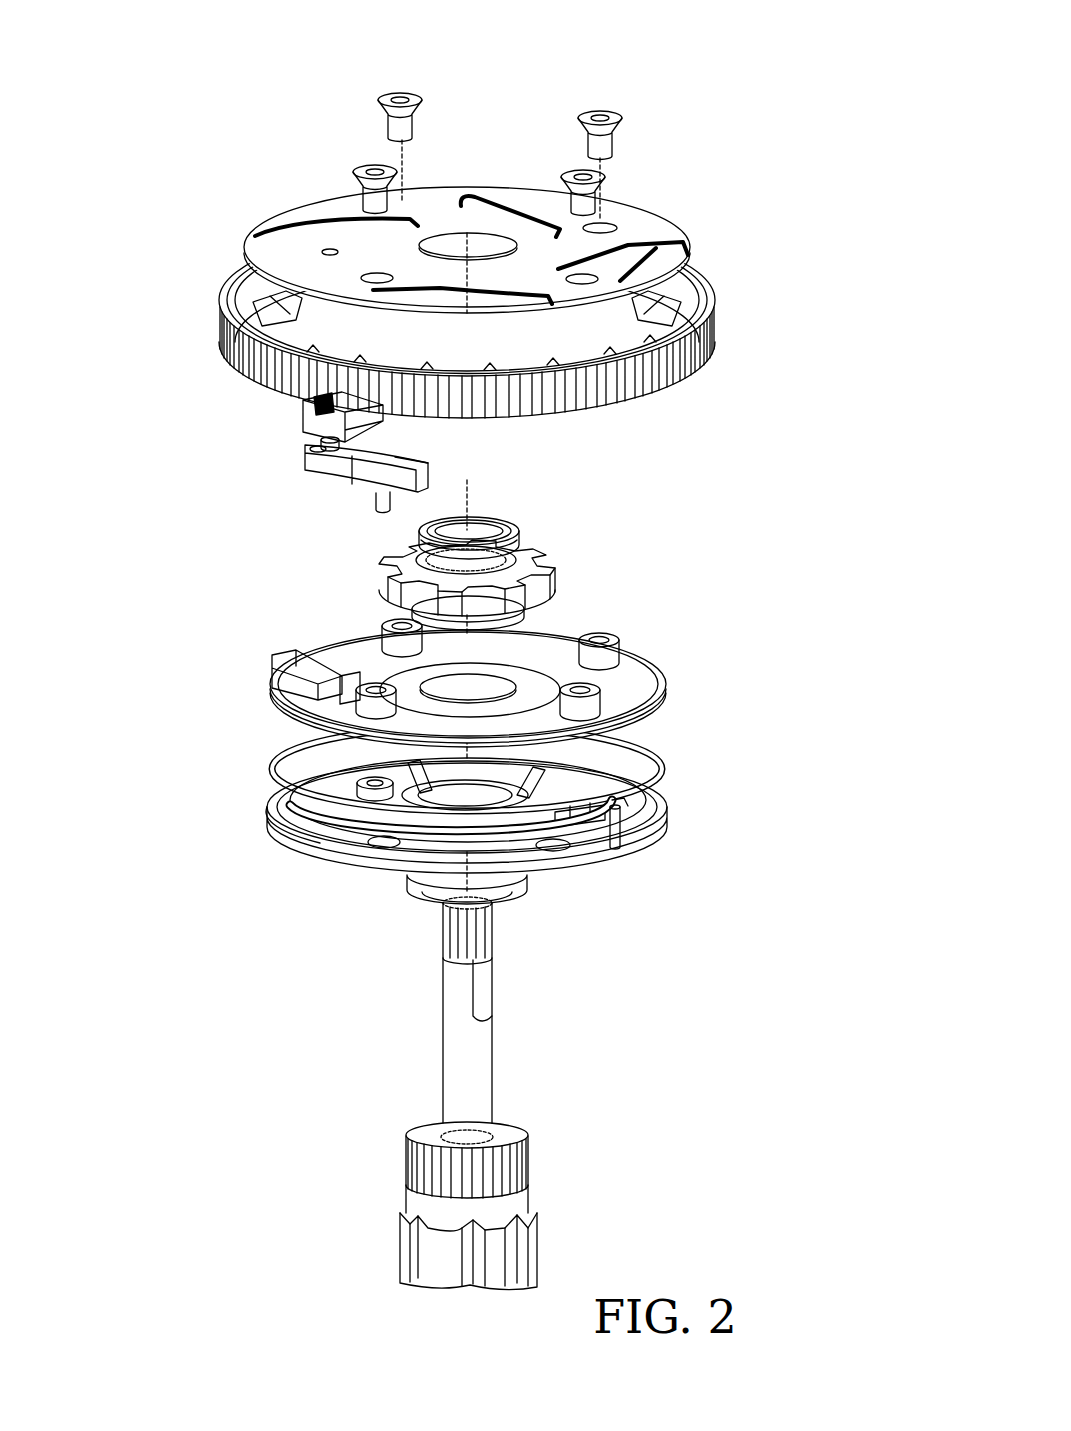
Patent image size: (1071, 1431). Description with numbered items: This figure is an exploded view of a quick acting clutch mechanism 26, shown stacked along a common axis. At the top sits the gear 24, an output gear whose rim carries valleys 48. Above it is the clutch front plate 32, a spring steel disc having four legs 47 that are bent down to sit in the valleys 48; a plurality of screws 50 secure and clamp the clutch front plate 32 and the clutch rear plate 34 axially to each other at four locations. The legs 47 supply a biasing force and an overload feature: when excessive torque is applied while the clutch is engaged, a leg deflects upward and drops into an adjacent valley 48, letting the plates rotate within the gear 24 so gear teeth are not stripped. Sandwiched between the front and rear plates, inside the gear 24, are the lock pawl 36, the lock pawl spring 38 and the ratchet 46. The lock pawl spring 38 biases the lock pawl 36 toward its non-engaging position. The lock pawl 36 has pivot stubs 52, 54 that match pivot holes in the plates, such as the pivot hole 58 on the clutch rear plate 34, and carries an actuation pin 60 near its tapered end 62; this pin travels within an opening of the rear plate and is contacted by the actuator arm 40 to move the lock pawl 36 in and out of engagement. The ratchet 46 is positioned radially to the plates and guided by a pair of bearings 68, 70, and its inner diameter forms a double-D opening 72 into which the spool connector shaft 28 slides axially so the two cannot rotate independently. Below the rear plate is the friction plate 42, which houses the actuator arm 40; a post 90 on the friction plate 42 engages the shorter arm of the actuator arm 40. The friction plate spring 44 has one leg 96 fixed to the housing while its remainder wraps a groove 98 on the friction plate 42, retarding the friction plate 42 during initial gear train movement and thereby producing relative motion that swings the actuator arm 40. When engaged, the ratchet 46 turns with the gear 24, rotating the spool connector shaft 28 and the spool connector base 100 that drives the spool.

The gear 24 is at (718, 345).
The clutch mechanism 26 is at (684, 596).
The spool connector shaft 28 is at (455, 1050).
The clutch front plate 32 is at (640, 228).
The clutch rear plate 34 is at (622, 686).
The lock pawl 36 is at (297, 472).
The lock pawl spring 38 is at (300, 410).
The actuator arm 40 is at (422, 842).
The friction plate 42 is at (572, 848).
The friction plate spring 44 is at (652, 762).
The ratchet 46 is at (545, 523).
The legs 47 is at (501, 195).
The valleys 48 is at (262, 300).
The screws 50 is at (398, 95).
The pivot stub 52 is at (325, 445).
The pivot stub 54 is at (323, 470).
The pivot hole 58 is at (300, 655).
The actuation pin 60 is at (378, 498).
The tapered end 62 is at (404, 462).
The bearing 68 is at (542, 611).
The bearing 70 is at (482, 528).
The double-D opening 72 is at (542, 560).
The post 90 is at (560, 842).
The leg 96 is at (612, 832).
The groove 98 is at (305, 830).
The spool connector base 100 is at (410, 1198).